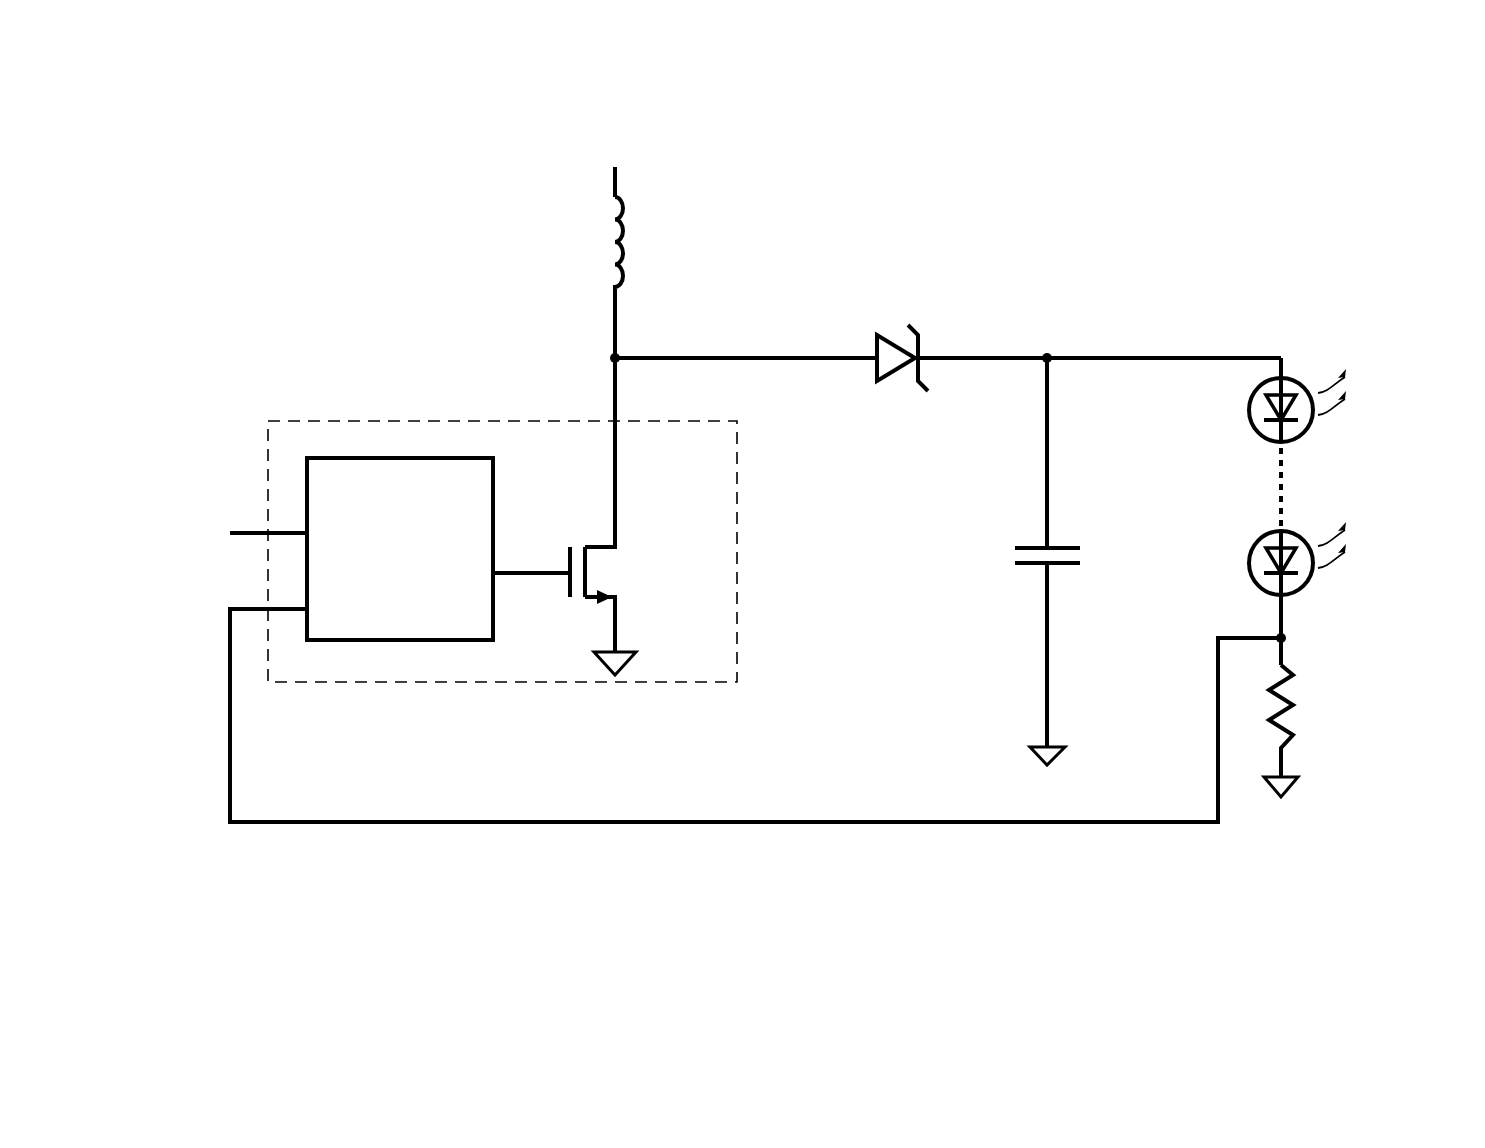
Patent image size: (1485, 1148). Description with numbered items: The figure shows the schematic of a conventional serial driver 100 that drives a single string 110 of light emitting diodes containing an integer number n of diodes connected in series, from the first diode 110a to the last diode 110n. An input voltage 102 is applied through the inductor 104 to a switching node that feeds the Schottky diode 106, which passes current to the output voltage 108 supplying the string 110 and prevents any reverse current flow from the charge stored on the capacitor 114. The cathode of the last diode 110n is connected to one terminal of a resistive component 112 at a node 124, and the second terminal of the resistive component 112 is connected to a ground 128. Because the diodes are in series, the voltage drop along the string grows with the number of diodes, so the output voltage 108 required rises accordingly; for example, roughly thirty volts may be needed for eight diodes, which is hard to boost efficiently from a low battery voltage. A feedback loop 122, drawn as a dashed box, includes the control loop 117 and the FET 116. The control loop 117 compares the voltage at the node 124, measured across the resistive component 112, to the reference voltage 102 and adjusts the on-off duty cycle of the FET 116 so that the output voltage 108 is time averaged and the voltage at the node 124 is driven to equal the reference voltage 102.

The serial LED driver 100 is at (222, 218).
The input voltage VIN / reference voltage 102 is at (635, 170).
The inductor L 104 is at (608, 222).
The Schottky diode 106 is at (870, 372).
The output voltage VOUT 108 is at (1025, 298).
The LED string 110 is at (1294, 478).
The first LED 110a is at (1252, 413).
The last LED 110n is at (1262, 548).
The resistive component RB 112 is at (1327, 682).
The capacitor 114 is at (1016, 565).
The FET 116 is at (606, 578).
The control loop 117 is at (480, 456).
The feedback loop 122 is at (290, 420).
The node 124 is at (1283, 355).
The ground 128 is at (1294, 770).